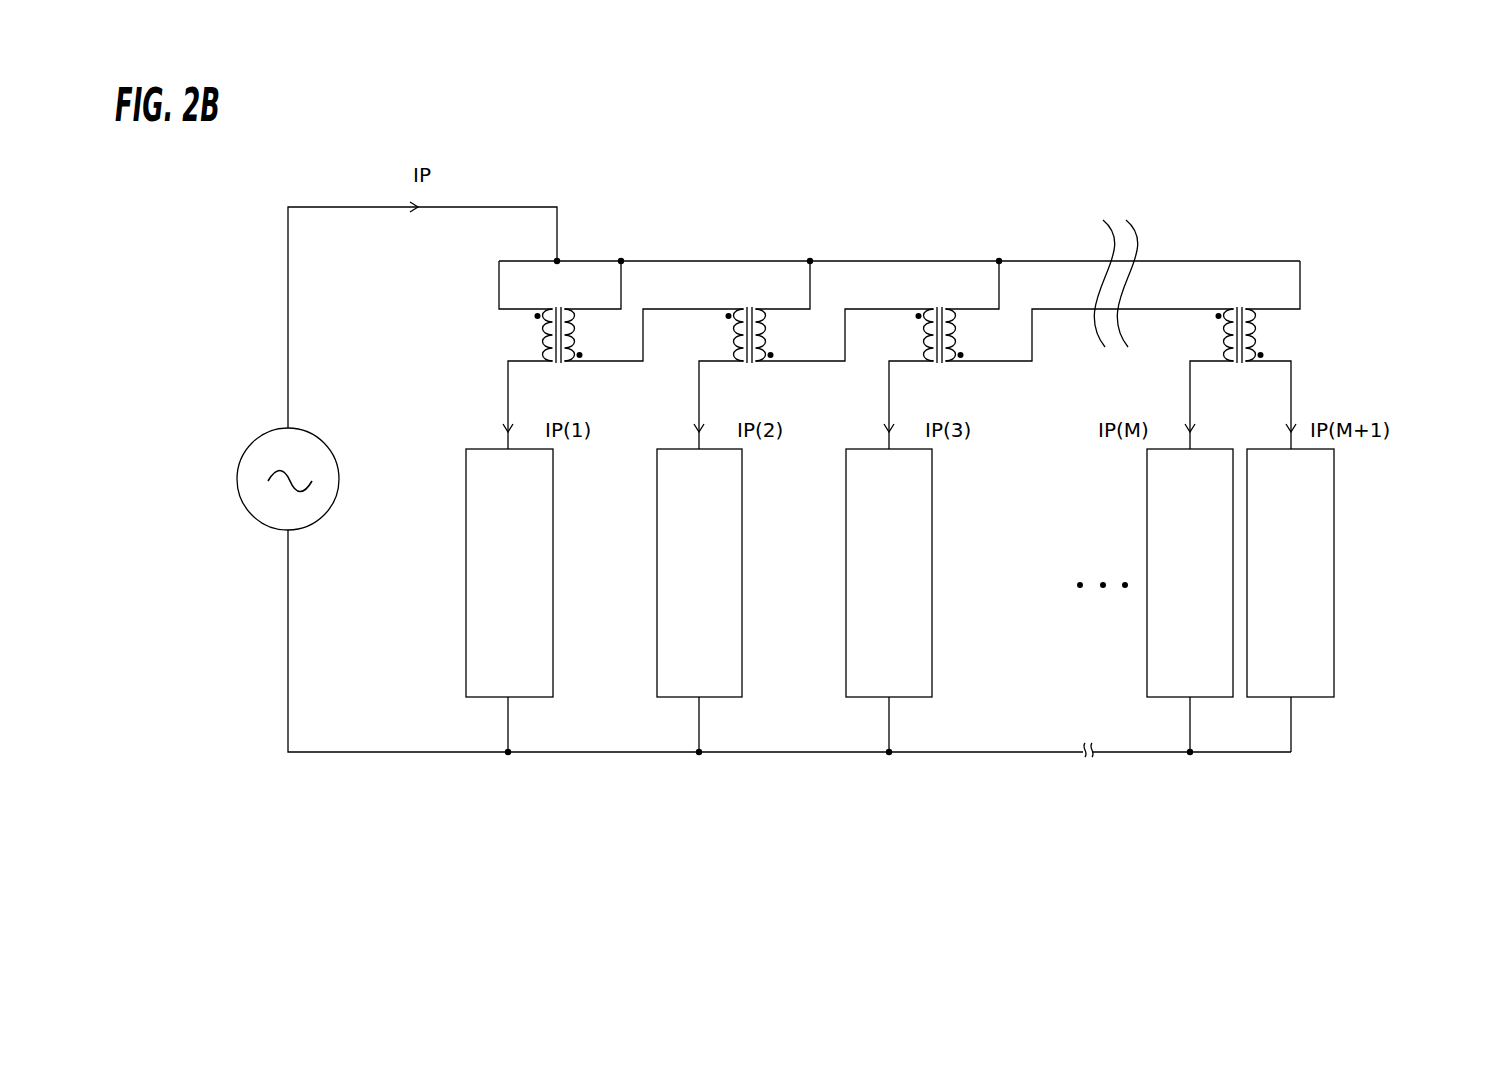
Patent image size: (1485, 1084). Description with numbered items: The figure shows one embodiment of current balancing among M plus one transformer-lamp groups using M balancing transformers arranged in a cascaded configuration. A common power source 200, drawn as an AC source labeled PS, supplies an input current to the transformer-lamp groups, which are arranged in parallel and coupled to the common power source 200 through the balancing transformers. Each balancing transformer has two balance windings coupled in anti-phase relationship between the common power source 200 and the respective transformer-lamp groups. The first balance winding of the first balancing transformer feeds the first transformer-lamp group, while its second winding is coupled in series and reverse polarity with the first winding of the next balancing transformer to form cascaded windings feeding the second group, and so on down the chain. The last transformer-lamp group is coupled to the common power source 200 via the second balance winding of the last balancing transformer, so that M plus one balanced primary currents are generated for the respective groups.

The common power source 200 is at (300, 427).